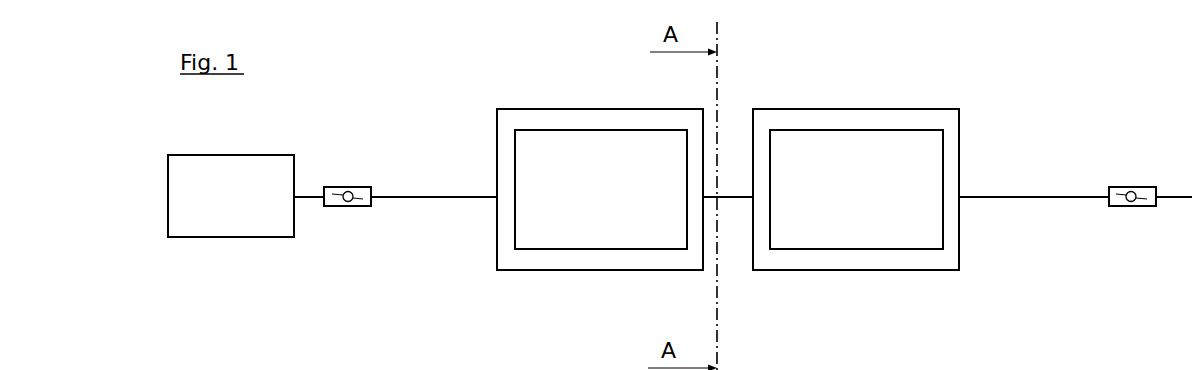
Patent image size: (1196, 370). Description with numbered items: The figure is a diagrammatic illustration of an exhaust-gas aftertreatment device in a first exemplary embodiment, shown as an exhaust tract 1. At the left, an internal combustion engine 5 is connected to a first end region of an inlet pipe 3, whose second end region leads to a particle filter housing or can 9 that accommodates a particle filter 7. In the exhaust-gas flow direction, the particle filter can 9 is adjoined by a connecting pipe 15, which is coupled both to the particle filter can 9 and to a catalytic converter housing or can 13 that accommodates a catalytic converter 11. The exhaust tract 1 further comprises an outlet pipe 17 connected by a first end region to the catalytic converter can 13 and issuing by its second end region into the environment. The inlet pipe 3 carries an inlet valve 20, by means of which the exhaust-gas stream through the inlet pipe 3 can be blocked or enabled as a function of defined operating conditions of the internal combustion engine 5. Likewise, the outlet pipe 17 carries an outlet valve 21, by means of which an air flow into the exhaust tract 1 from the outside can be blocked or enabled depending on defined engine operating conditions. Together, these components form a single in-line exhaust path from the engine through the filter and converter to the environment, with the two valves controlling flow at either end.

The exhaust tract 1 is at (1003, 90).
The inlet pipe 3 is at (433, 195).
The internal combustion engine 5 is at (239, 208).
The particle filter 7 is at (584, 249).
The particle filter housing 9 is at (638, 270).
The catalytic converter 11 is at (841, 249).
The catalytic converter housing 13 is at (903, 270).
The connecting pipe 15 is at (727, 196).
The outlet pipe 17 is at (1037, 196).
The inlet valve 20 is at (340, 206).
The outlet valve 21 is at (1131, 206).